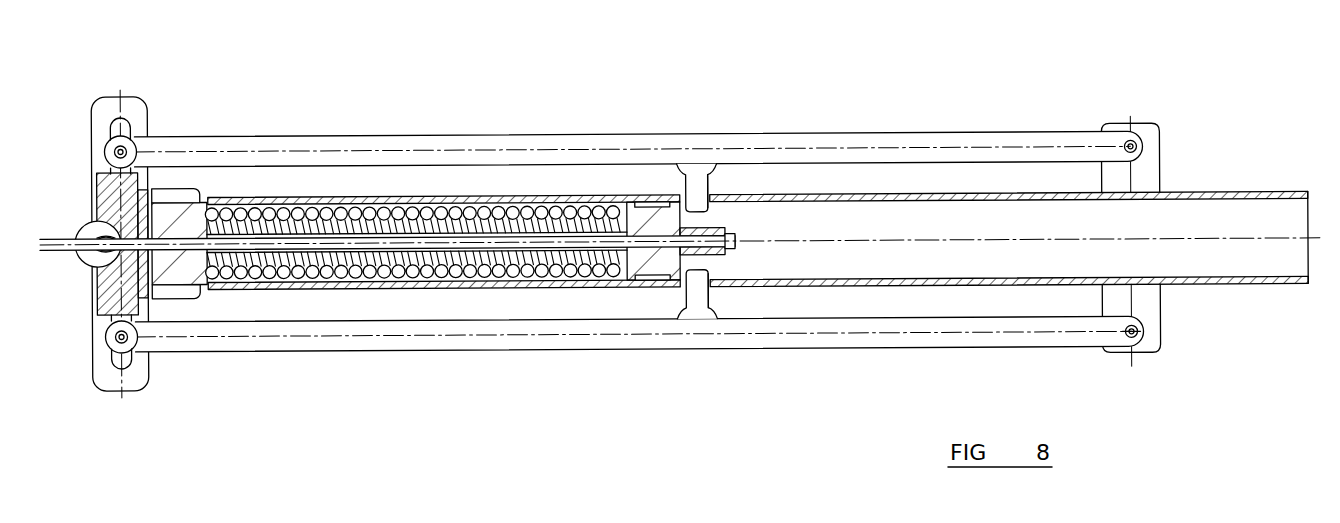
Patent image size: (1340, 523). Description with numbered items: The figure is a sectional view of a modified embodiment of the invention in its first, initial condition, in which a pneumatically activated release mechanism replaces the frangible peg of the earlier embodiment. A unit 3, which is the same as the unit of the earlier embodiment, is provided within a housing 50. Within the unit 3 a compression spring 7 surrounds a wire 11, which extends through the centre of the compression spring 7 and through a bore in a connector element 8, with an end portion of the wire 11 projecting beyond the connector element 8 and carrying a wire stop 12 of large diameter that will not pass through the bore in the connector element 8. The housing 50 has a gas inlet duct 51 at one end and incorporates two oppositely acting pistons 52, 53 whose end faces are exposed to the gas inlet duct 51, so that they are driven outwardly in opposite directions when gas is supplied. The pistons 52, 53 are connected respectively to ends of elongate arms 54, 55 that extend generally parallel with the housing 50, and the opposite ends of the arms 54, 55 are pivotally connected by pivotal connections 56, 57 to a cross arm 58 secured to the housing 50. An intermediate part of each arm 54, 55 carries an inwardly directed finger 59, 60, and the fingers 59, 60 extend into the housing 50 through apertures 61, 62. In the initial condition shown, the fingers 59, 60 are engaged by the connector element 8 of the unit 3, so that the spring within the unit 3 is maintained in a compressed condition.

The unit 3 is at (368, 208).
The compression spring 7 is at (312, 209).
The connector element 8 is at (652, 279).
The wire 11 is at (452, 241).
The wire stop 12 is at (712, 228).
The housing 50 is at (877, 203).
The gas inlet duct 51 is at (79, 221).
The piston 52 is at (101, 297).
The piston 53 is at (103, 190).
The elongate arm 54 is at (188, 354).
The elongate arm 55 is at (188, 138).
The pivotal connection 56 is at (1137, 349).
The pivotal connection 57 is at (1151, 134).
The cross arm 58 is at (1152, 317).
The finger 59 is at (700, 309).
The finger 60 is at (690, 190).
The aperture 61 is at (709, 280).
The aperture 62 is at (719, 196).